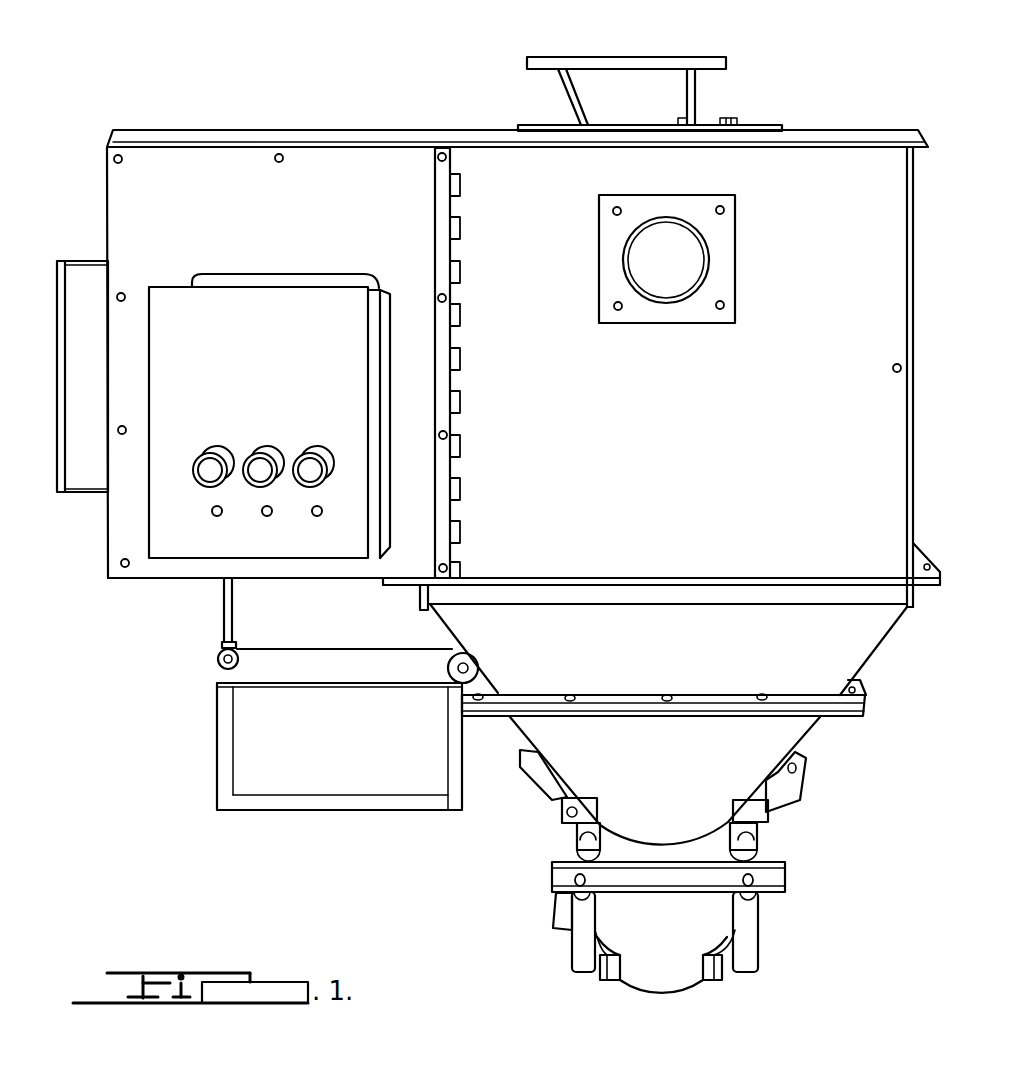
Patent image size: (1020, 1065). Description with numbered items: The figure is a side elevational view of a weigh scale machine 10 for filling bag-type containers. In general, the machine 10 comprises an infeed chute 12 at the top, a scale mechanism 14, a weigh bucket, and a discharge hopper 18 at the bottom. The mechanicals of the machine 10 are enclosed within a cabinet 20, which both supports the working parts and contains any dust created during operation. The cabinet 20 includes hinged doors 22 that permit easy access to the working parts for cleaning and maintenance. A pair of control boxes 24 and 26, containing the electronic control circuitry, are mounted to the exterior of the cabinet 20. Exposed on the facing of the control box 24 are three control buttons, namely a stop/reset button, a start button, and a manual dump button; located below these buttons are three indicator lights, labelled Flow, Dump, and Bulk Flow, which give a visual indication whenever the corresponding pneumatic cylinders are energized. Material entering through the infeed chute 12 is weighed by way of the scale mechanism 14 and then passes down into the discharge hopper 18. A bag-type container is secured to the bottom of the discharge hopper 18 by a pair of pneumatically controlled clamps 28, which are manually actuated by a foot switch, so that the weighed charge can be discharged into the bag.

The weigh scale machine 10 is at (451, 124).
The infeed chute 12 is at (635, 60).
The scale mechanism 14 is at (210, 673).
The discharge hopper 18 is at (814, 732).
The cabinet 20 is at (828, 164).
The hinged doors 22 is at (598, 560).
The control box 24 is at (162, 287).
The control box 26 is at (78, 268).
The pneumatically controlled clamps 28 is at (747, 940).